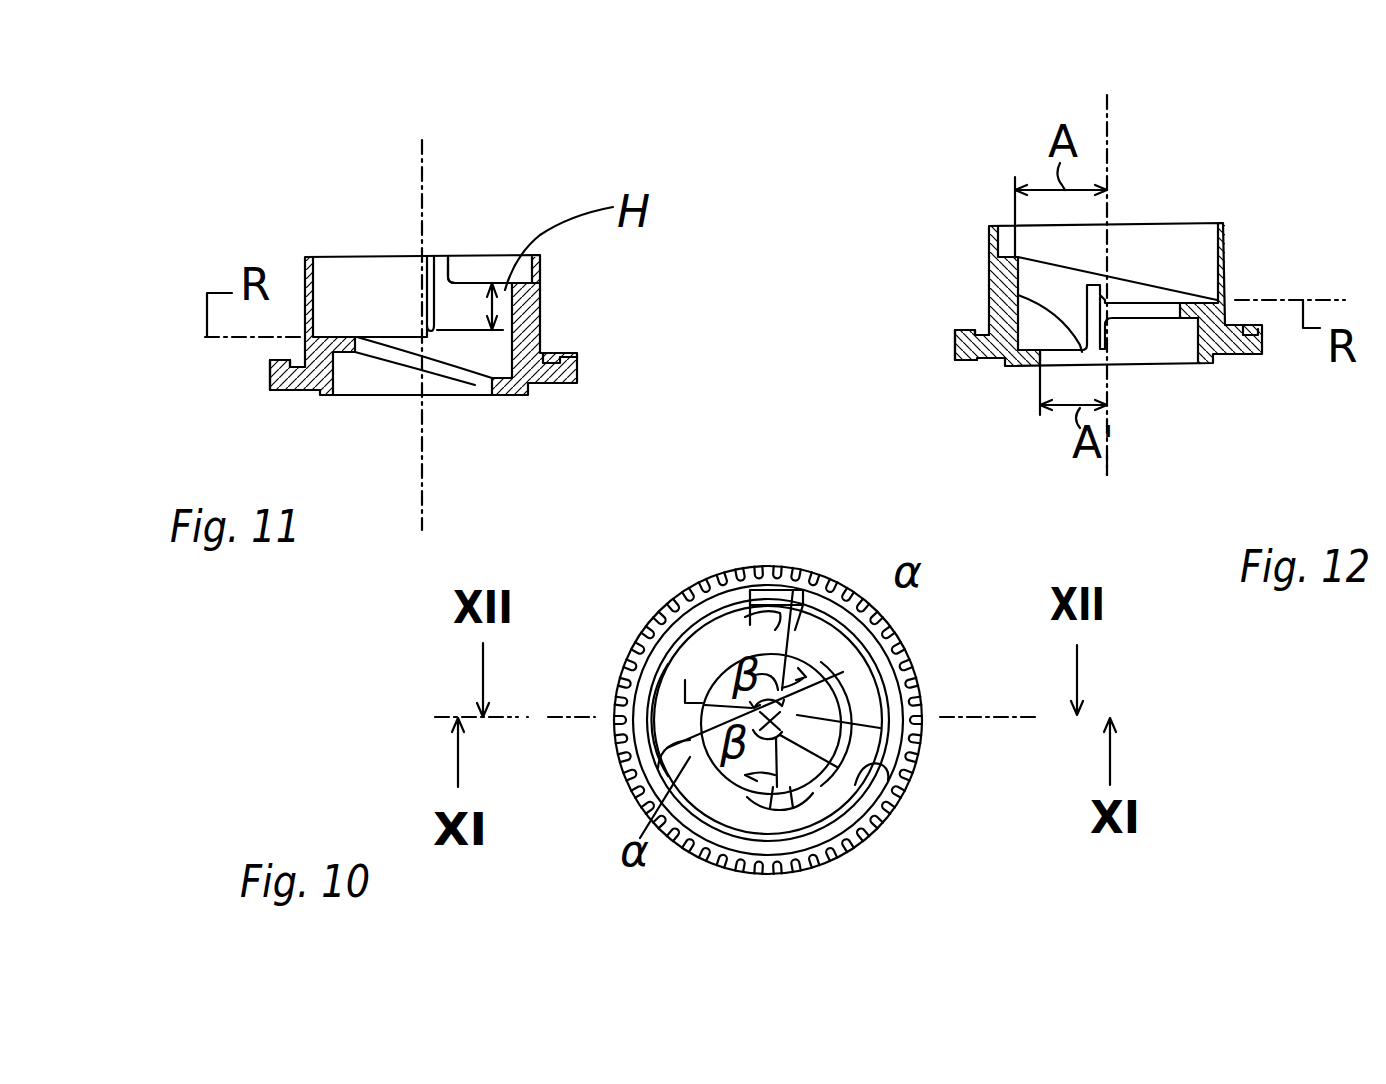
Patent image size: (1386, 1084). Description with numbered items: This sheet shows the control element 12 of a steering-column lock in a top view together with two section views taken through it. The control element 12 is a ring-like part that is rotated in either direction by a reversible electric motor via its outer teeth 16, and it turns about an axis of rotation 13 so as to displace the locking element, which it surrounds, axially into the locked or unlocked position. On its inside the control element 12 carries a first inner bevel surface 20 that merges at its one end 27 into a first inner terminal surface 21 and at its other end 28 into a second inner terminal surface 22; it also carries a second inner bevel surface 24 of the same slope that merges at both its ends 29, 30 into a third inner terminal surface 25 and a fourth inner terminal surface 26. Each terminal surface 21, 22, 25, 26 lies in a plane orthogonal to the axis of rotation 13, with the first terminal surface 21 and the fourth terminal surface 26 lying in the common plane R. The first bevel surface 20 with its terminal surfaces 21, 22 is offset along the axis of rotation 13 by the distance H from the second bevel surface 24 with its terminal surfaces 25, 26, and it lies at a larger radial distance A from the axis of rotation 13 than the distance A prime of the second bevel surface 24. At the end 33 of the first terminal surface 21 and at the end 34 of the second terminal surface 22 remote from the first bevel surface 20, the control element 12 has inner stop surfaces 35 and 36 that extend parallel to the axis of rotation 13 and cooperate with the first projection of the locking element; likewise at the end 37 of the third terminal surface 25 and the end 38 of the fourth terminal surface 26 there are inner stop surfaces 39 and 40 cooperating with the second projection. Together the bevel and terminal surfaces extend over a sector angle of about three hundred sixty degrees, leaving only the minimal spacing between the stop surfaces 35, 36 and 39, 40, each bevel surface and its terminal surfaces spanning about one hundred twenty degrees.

In FIG. 11, the control element 12 is at (530, 320).
In FIG. 12, the control element 12 is at (993, 243).
In FIG. 10, the control element 12 is at (883, 628).
In FIG. 11, the axis of rotation 13 is at (400, 164).
In FIG. 12, the axis of rotation 13 is at (1110, 478).
In FIG. 10, the axis of rotation 13 is at (905, 722).
In FIG. 11, the outer teeth 16 is at (270, 372).
In FIG. 12, the outer teeth 16 is at (960, 343).
In FIG. 10, the outer teeth 16 is at (800, 567).
In FIG. 12, the first inner bevel surface 20 is at (1075, 270).
In FIG. 10, the first inner bevel surface 20 is at (783, 817).
In FIG. 11, the first inner terminal surface 21 is at (347, 337).
In FIG. 12, the first inner terminal surface 21 is at (1205, 302).
In FIG. 10, the first inner terminal surface 21 is at (710, 665).
In FIG. 11, the second inner terminal surface 22 is at (500, 281).
In FIG. 12, the second inner terminal surface 22 is at (1007, 243).
In FIG. 10, the second inner terminal surface 22 is at (868, 662).
In FIG. 11, the second inner bevel surface 24 is at (408, 352).
In FIG. 10, the second inner bevel surface 24 is at (725, 670).
In FIG. 11, the third inner terminal surface 25 is at (512, 376).
In FIG. 12, the third inner terminal surface 25 is at (1020, 313).
In FIG. 10, the third inner terminal surface 25 is at (847, 737).
In FIG. 11, the fourth inner terminal surface 26 is at (313, 253).
In FIG. 12, the fourth inner terminal surface 26 is at (1172, 298).
In FIG. 10, the fourth inner terminal surface 26 is at (697, 797).
In FIG. 10, the one end of the first bevel surface 27 is at (683, 745).
In FIG. 10, the other end of the first bevel surface 28 is at (840, 780).
In FIG. 10, the end of the second bevel surface 29 is at (857, 642).
In FIG. 10, the end of the second bevel surface 30 is at (685, 682).
In FIG. 11, the end of the first terminal surface 33 is at (390, 337).
In FIG. 10, the end of the first terminal surface 33 is at (737, 655).
In FIG. 11, the end of the second terminal surface 34 is at (484, 283).
In FIG. 10, the end of the second terminal surface 34 is at (810, 632).
In FIG. 11, the inner stop surface 35 is at (427, 273).
In FIG. 10, the inner stop surface 35 is at (777, 622).
In FIG. 11, the inner stop surface 36 is at (457, 282).
In FIG. 10, the inner stop surface 36 is at (813, 620).
In FIG. 12, the end of the third terminal surface 37 is at (1018, 295).
In FIG. 10, the end of the third terminal surface 37 is at (813, 790).
In FIG. 12, the end of the fourth terminal surface 38 is at (1113, 297).
In FIG. 10, the end of the fourth terminal surface 38 is at (760, 807).
In FIG. 12, the inner stop surface 39 is at (1097, 296).
In FIG. 10, the inner stop surface 39 is at (803, 793).
In FIG. 12, the inner stop surface 40 is at (1110, 290).
In FIG. 10, the inner stop surface 40 is at (773, 808).